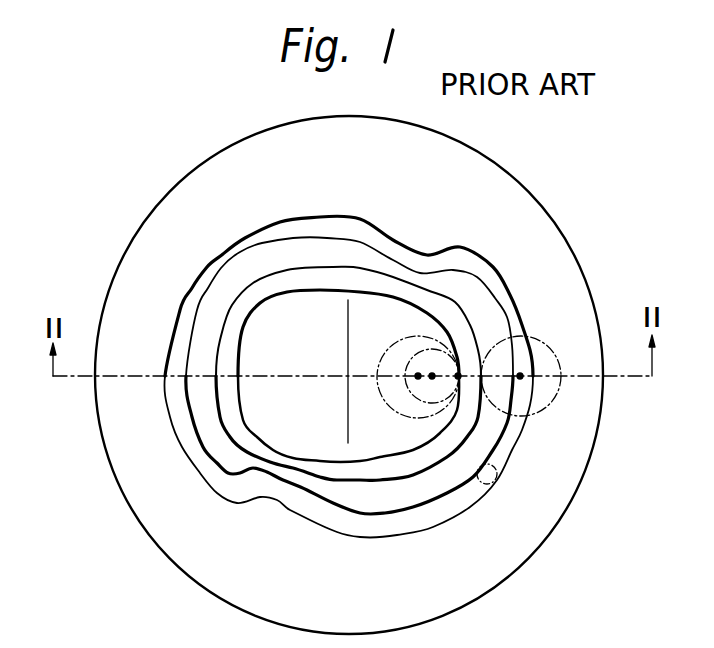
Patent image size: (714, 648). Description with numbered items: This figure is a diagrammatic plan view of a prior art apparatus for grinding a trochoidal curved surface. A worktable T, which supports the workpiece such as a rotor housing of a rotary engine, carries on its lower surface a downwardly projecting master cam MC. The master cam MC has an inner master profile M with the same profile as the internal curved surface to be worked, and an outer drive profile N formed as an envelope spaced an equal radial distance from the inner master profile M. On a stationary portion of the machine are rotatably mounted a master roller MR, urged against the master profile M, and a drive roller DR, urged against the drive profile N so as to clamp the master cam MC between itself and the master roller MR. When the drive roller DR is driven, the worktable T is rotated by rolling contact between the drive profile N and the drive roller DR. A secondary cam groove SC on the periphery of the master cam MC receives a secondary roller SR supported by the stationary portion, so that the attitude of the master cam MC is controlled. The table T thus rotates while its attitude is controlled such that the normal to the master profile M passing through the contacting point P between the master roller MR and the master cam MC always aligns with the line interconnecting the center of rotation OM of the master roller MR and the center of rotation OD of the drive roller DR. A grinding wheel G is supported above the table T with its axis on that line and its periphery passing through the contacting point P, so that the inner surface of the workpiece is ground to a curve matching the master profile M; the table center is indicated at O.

The worktable T is at (566, 498).
The outer drive profile N is at (460, 305).
The secondary cam groove SC is at (522, 427).
The master cam MC is at (374, 479).
The inner master profile M is at (406, 298).
The center axis O is at (340, 371).
The center of rotation of the master roller OM is at (418, 376).
The grinding wheel G is at (382, 392).
The master roller MR is at (397, 414).
The contacting point P is at (458, 374).
The drive roller DR is at (540, 341).
The center of rotation of the drive roller OD is at (522, 378).
The secondary roller SR is at (486, 484).